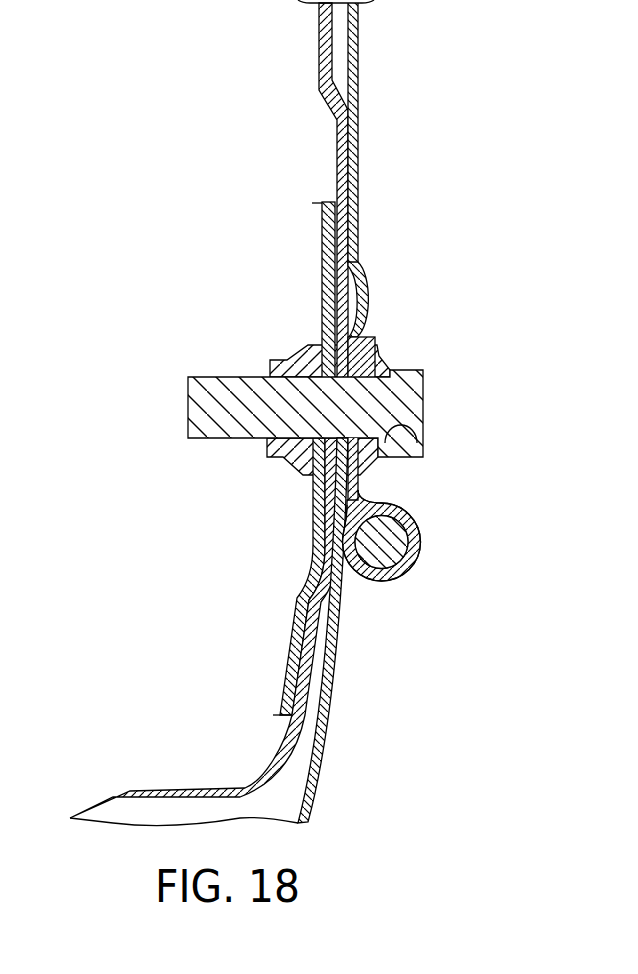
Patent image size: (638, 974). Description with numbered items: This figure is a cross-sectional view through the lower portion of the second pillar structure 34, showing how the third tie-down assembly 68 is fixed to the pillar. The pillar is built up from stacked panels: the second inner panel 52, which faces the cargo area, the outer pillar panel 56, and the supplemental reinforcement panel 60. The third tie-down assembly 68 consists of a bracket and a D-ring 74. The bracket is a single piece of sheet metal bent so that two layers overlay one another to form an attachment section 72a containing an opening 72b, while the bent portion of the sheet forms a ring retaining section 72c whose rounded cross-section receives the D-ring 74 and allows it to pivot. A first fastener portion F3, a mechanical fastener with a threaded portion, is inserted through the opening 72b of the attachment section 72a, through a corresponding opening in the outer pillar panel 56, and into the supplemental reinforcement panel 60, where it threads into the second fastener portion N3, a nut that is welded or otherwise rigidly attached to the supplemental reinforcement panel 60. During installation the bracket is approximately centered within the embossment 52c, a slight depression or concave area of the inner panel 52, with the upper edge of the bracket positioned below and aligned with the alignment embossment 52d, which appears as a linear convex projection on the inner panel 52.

The second pillar structure 34 is at (360, 28).
The second inner panel 52 is at (358, 75).
The embossment 52c is at (376, 345).
The alignment embossment 52d is at (368, 292).
The outer pillar panel 56 is at (338, 153).
The supplemental reinforcement panel 60 is at (322, 262).
The second fastener portion N3 is at (299, 362).
The first fastener portion F3 is at (404, 408).
The attachment section 72a is at (370, 482).
The opening 72b is at (420, 443).
The ring retaining section 72c is at (412, 521).
The D-ring 74 is at (393, 542).
The third tie-down assembly 68 is at (422, 542).